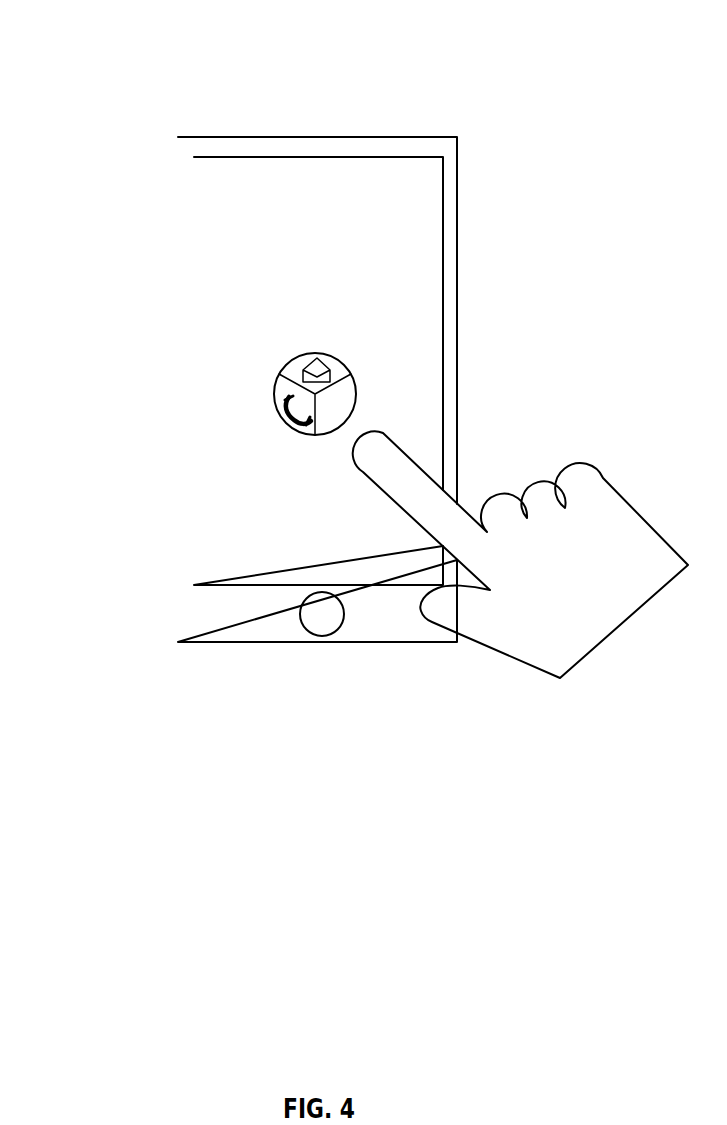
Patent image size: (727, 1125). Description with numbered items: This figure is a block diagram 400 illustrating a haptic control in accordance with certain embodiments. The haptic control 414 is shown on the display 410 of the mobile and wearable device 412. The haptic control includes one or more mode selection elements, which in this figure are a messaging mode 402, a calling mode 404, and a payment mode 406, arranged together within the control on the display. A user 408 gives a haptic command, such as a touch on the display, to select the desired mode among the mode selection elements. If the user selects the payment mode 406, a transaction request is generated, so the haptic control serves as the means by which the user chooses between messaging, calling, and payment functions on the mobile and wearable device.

The block diagram 400 is at (598, 60).
The messaging mode 402 is at (316, 353).
The calling mode 404 is at (259, 440).
The payment mode 406 is at (345, 408).
The user 408 is at (420, 495).
The display 410 is at (240, 249).
The mobile and wearable device 412 is at (180, 148).
The haptic control 414 is at (300, 422).